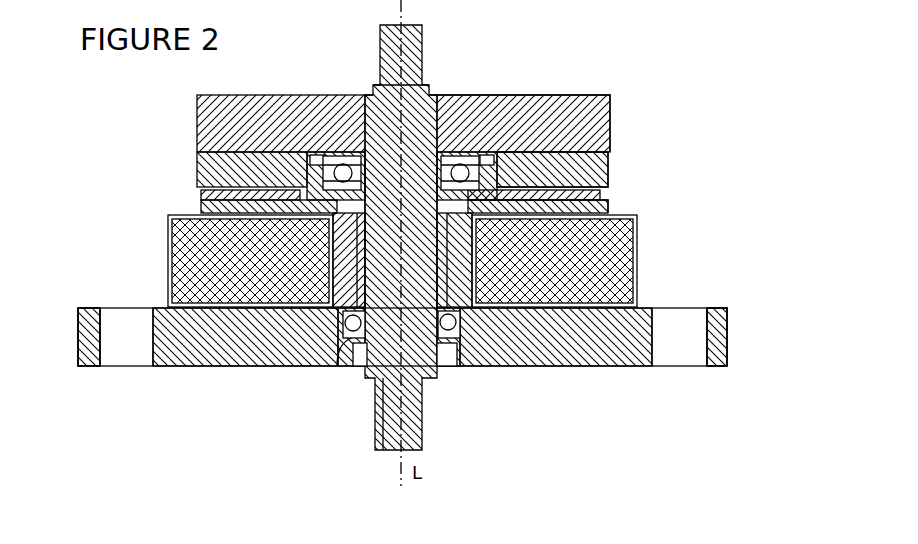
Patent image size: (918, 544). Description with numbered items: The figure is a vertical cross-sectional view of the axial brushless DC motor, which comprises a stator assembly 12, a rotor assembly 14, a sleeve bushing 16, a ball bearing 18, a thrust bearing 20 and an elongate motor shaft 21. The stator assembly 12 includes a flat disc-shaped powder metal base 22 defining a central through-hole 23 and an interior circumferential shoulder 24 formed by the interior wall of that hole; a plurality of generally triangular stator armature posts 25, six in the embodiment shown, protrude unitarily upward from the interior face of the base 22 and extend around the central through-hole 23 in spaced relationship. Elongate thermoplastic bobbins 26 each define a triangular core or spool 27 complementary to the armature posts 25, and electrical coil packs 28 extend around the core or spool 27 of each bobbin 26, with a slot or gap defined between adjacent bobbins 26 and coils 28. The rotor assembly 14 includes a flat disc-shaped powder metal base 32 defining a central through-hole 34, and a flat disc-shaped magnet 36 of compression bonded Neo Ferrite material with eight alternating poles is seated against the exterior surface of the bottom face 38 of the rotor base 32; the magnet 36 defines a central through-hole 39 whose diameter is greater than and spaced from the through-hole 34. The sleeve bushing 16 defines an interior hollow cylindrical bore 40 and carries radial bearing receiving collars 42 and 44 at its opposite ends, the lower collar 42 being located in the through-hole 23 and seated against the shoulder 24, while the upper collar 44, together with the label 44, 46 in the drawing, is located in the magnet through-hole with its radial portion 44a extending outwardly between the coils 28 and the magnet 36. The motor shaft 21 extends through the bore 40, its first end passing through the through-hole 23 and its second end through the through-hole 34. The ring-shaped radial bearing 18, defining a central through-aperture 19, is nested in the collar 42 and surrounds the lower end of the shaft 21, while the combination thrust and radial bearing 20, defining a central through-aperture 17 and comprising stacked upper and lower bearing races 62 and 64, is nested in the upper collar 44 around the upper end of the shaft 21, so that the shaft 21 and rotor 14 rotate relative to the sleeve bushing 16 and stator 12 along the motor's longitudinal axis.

The stator assembly 12 is at (194, 374).
The rotor assembly 14 is at (507, 92).
The sleeve bushing 16 is at (333, 252).
The central through-aperture 17 is at (447, 140).
The ball bearing 18 is at (352, 343).
The central through-aperture 19 is at (430, 378).
The thrust bearing 20 is at (342, 152).
The motor shaft 21 is at (414, 110).
The flat base 22 is at (565, 342).
The central through-hole 23 is at (338, 366).
The interior circumferential shoulder 24 is at (452, 340).
The stator armature posts 25 is at (201, 205).
The bobbins 26 is at (166, 217).
The core or spool 27 is at (115, 345).
The electrical coil packs 28 is at (168, 252).
The rotor base 32 is at (610, 100).
The central through-hole 34 is at (378, 90).
The magnet 36 is at (608, 188).
The bottom face 38 is at (197, 165).
The central through-hole 39 is at (500, 152).
The interior bore 40 is at (201, 190).
The radial bearing receiving collar 42 is at (480, 337).
The radial bearing receiving collar 44 is at (608, 154).
The magnet 46 is at (552, 169).
The radial portion 44a is at (610, 200).
The upper bearing race 62 is at (482, 155).
The lower bearing race 64 is at (497, 162).